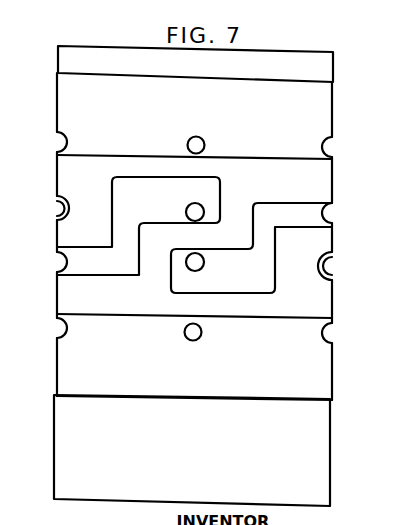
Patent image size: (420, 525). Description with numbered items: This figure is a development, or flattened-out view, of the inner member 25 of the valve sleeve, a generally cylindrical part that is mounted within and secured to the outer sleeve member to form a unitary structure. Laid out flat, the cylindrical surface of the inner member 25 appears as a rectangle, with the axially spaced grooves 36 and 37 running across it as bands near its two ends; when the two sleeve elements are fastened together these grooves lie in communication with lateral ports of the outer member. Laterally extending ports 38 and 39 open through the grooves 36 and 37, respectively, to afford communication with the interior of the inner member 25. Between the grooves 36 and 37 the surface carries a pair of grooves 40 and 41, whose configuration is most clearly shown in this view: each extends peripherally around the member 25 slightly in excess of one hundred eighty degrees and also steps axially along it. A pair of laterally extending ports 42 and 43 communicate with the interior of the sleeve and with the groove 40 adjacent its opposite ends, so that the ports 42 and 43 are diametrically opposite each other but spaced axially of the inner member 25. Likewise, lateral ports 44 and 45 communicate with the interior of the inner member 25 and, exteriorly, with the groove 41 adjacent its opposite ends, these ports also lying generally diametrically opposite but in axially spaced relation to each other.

The inner member 25 is at (68, 445).
The groove 36 is at (73, 92).
The groove 37 is at (70, 382).
The laterally extending port 38 is at (61, 143).
The laterally extending port 39 is at (58, 329).
The groove 40 is at (133, 196).
The groove 41 is at (261, 274).
The laterally extending port 42 is at (186, 212).
The laterally extending port 43 is at (58, 264).
The lateral port 44 is at (204, 261).
The lateral port 45 is at (58, 208).